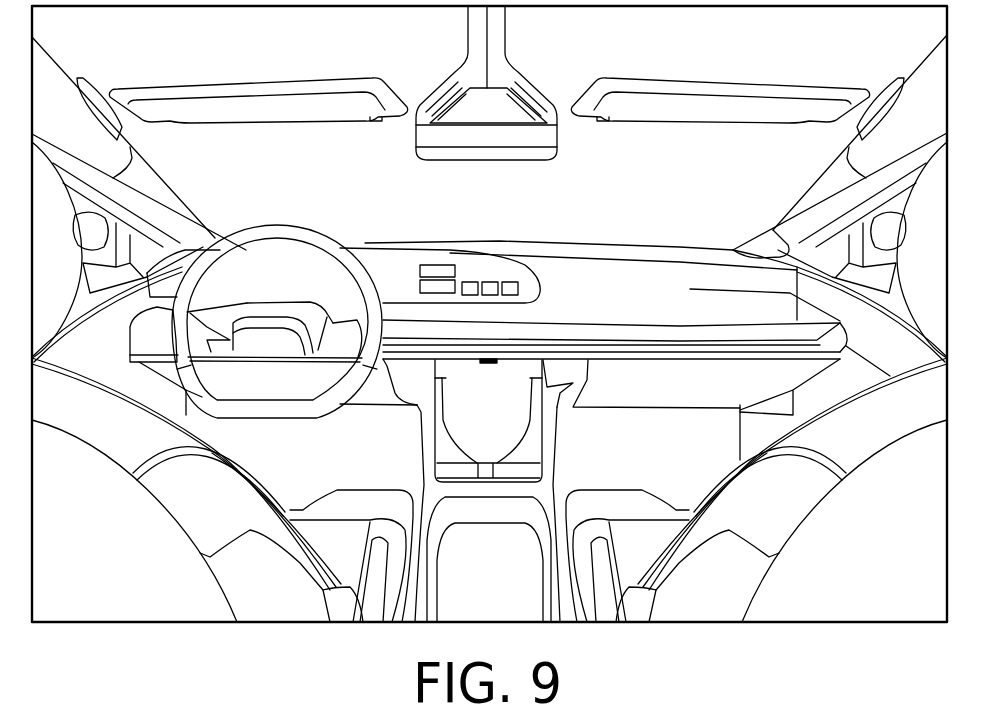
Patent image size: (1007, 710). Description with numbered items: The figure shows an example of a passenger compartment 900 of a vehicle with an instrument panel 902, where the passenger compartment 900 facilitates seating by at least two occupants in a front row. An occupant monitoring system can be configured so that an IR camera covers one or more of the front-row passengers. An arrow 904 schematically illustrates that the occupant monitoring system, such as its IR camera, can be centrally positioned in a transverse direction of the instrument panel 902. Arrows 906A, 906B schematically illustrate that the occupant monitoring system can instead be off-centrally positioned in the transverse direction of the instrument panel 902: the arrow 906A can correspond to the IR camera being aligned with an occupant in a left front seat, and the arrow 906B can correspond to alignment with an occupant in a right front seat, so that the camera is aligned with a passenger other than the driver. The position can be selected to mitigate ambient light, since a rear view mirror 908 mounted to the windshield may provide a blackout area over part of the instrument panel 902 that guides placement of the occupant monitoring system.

The passenger compartment 900 is at (509, 596).
The instrument panel 902 is at (670, 310).
The arrow 904 is at (477, 228).
The arrow 906A is at (261, 218).
The arrow 906B is at (717, 232).
The rear view mirror 908 is at (505, 118).